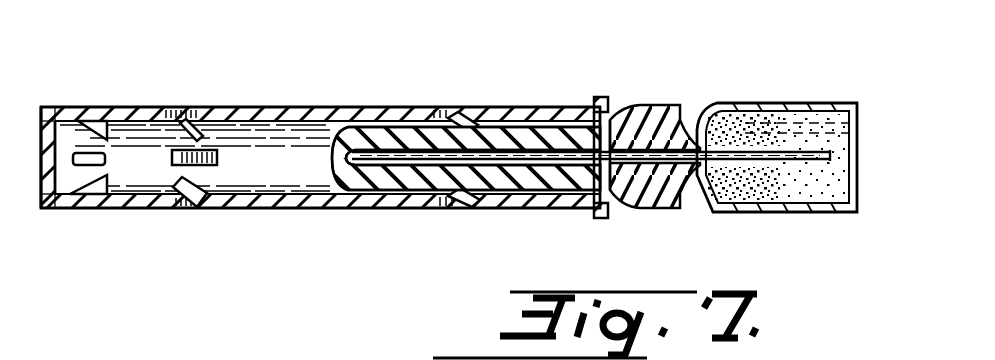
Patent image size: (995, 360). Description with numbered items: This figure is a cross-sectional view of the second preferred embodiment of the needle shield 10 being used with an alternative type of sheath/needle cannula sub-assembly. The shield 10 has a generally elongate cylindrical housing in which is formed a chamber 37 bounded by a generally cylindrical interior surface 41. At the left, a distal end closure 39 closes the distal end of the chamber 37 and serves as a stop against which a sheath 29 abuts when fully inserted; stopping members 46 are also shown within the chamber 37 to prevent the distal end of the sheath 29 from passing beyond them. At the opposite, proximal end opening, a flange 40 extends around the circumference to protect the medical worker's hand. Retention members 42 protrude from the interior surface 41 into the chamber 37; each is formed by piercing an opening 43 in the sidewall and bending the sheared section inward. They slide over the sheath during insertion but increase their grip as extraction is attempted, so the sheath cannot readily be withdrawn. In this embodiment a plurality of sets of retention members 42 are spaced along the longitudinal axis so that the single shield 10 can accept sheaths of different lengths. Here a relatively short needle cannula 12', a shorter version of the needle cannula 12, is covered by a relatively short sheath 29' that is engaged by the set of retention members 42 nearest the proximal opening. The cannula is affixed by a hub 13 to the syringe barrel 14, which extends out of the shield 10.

The needle shield 10 is at (270, 88).
The needle cannula 12 is at (314, 350).
The relatively short needle cannula 12' is at (591, 203).
The hub 13 is at (642, 104).
The syringe barrel 14 is at (741, 105).
The sheath 29 is at (266, 351).
The relatively short sheath 29' is at (446, 123).
The chamber 37 is at (281, 171).
The distal end closure 39 is at (47, 140).
The flange 40 is at (605, 192).
The interior surface 41 is at (262, 122).
The retention member 42 is at (186, 200).
The opening 43 is at (174, 156).
The stopping member 46 is at (102, 184).